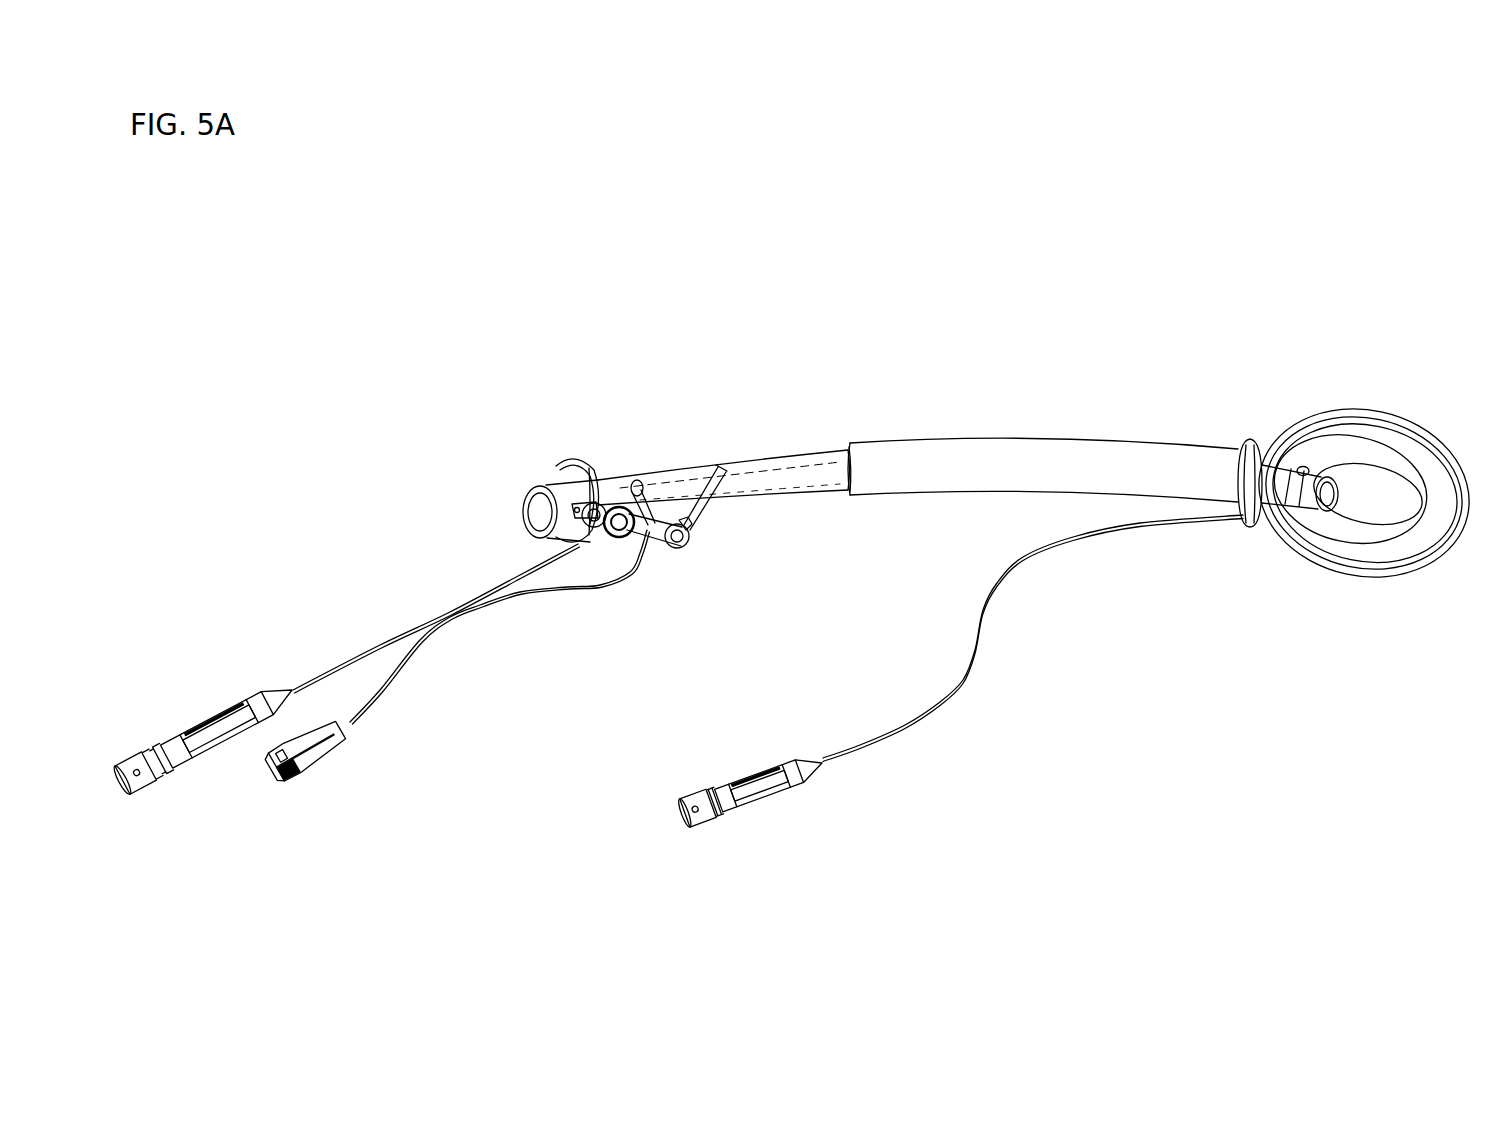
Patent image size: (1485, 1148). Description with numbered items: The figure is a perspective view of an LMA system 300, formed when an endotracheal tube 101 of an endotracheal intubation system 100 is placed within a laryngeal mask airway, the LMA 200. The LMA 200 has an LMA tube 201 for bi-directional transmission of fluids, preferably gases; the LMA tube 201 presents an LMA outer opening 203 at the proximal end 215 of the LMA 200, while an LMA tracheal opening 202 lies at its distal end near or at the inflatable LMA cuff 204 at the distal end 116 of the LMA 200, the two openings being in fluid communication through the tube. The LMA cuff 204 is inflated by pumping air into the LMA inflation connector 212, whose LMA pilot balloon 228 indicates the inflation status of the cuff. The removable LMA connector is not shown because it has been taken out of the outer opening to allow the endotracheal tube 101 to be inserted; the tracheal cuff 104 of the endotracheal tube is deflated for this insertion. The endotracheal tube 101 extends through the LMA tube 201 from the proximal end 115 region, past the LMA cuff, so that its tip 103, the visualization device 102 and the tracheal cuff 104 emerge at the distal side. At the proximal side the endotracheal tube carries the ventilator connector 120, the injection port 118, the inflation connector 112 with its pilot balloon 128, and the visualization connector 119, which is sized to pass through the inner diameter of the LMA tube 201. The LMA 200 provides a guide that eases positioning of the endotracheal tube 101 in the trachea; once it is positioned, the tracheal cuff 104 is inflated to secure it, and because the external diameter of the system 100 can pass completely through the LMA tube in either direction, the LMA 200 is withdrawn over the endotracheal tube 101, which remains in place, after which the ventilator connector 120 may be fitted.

The LMA system 300 is at (836, 283).
The endotracheal intubation system 100 is at (663, 443).
The endotracheal tube 101 is at (762, 480).
The visualization device 102 is at (1333, 502).
The tip 103 is at (1270, 468).
The tracheal cuff 104 is at (1248, 445).
The inflation connector 112 is at (130, 775).
The proximal end 115 is at (475, 507).
The distal end 116 is at (1341, 627).
The injection port 118 is at (678, 545).
The visualization connector 119 is at (350, 725).
The ventilator connector 120 is at (475, 462).
The pilot balloon 128 is at (227, 707).
The LMA 200 is at (1176, 420).
The LMA tube 201 is at (963, 463).
The LMA tracheal opening 202 is at (1246, 522).
The LMA outer opening 203 is at (847, 447).
The LMA cuff 204 is at (1345, 413).
The LMA inflation connector 212 is at (688, 823).
The proximal end of LMA 215 is at (870, 517).
The LMA pilot balloon 228 is at (787, 789).